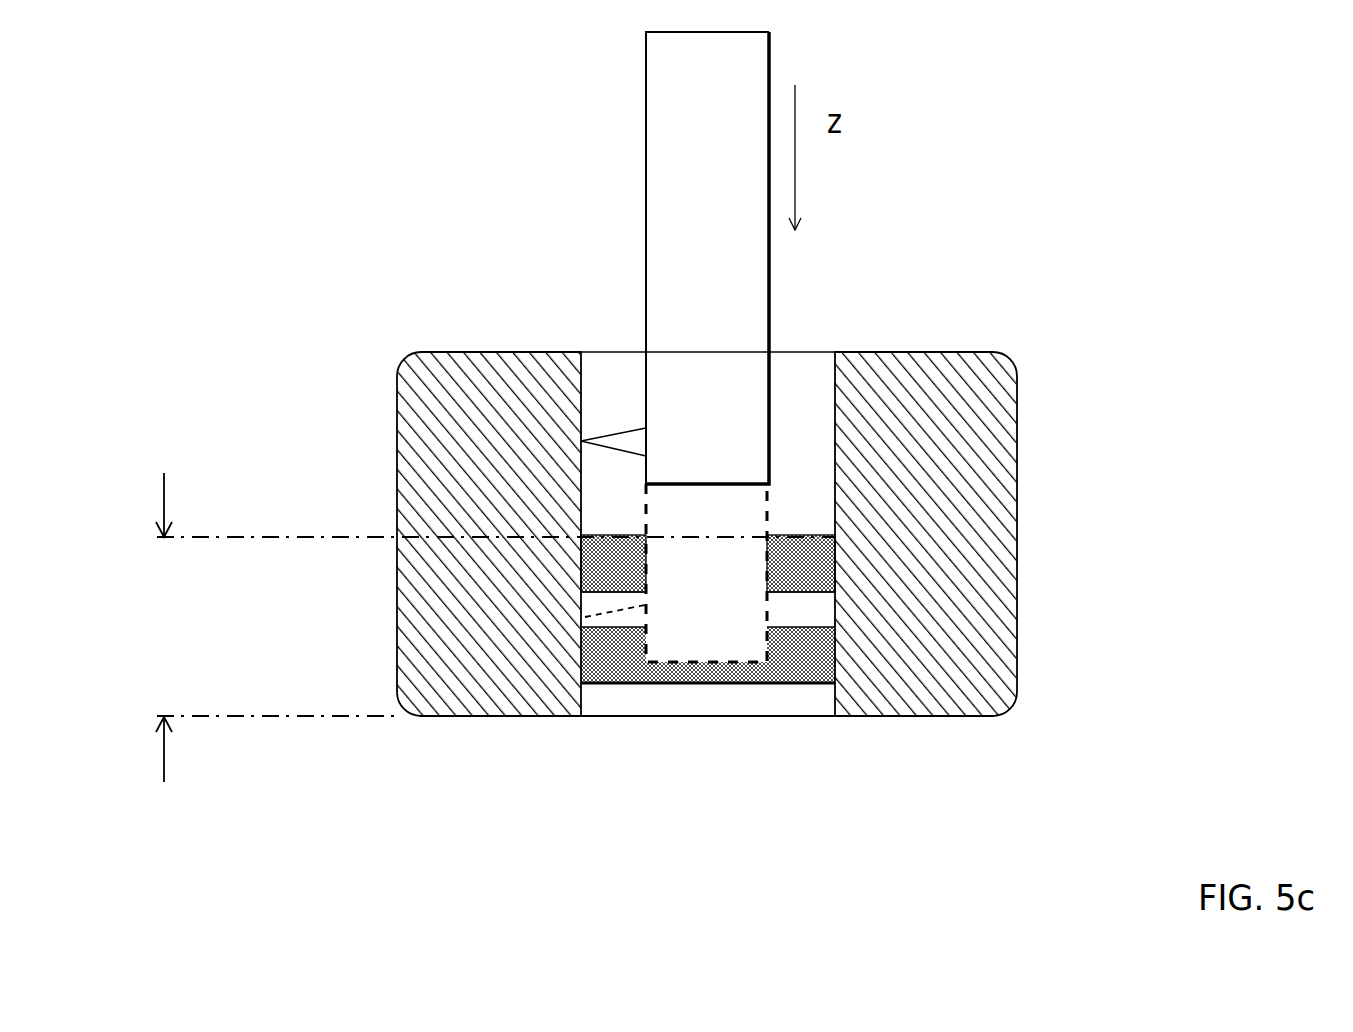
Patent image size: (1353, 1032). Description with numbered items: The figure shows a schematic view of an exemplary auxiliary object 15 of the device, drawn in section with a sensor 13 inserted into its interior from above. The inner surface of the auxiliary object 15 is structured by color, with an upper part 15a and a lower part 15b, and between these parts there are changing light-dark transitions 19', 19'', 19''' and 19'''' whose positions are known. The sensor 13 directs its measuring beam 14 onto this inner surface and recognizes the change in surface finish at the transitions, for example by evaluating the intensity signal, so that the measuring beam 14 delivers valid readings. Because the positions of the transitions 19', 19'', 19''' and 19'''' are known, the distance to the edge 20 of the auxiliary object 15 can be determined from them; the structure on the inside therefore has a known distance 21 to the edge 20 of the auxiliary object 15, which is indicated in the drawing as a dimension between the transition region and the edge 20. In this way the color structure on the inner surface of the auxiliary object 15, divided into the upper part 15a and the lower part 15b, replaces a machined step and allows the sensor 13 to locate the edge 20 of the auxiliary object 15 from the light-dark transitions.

The sensor 13 is at (645, 203).
The measuring beam 14 is at (612, 627).
The auxiliary object 15 is at (823, 596).
The upper part 15a is at (808, 487).
The lower part 15b is at (793, 683).
The transition 19' is at (859, 502).
The transition 19'' is at (864, 530).
The transition 19''' is at (869, 565).
The transition 19'''' is at (874, 625).
The edge of the auxiliary object 20 is at (967, 717).
The known distance 21 is at (495, 605).